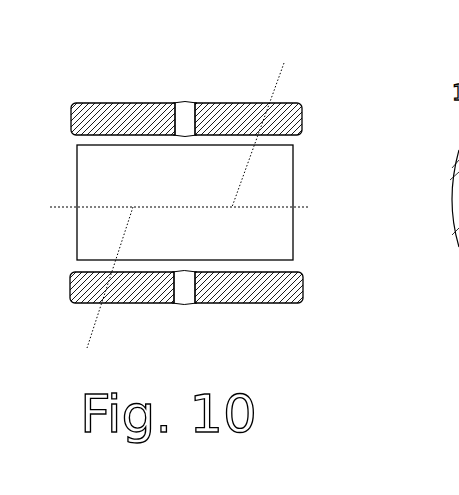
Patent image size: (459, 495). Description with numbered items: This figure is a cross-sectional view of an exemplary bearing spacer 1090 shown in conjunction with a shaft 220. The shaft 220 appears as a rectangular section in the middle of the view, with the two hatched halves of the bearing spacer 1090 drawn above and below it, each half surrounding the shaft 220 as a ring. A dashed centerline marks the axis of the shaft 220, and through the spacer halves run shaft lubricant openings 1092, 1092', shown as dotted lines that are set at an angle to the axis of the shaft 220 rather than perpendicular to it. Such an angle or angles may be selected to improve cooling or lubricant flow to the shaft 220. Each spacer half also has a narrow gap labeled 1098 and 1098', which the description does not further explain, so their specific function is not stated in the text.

The bearing spacer 1090 is at (252, 44).
The shaft 220 is at (198, 241).
The shaft lubricant opening 1092 is at (207, 135).
The upper ring gap 1098 is at (148, 102).
The shaft lubricant opening 1092' is at (164, 277).
The lower ring gap 1098' is at (223, 304).